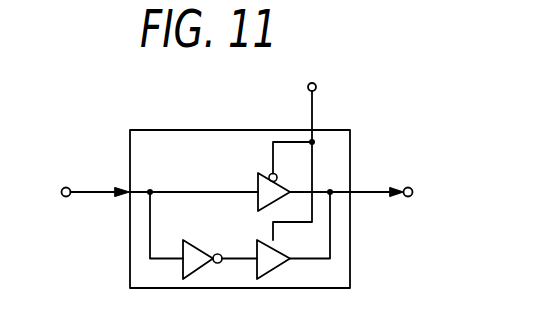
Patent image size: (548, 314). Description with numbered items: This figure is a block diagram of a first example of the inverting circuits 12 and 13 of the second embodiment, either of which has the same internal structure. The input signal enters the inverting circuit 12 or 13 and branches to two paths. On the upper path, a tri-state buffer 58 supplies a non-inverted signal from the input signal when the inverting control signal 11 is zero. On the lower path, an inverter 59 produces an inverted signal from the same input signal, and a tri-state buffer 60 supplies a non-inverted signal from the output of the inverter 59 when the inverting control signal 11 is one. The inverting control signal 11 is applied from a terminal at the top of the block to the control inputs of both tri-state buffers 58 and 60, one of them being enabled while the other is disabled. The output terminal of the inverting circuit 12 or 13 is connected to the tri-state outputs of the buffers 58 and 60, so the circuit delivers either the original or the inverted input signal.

The inverting control signal 11 is at (313, 110).
The inverting circuit 12 is at (265, 196).
The inverting circuit 13 is at (338, 130).
The tri-state buffer 58 is at (257, 182).
The inverter 59 is at (194, 247).
The tri-state buffer 60 is at (281, 250).